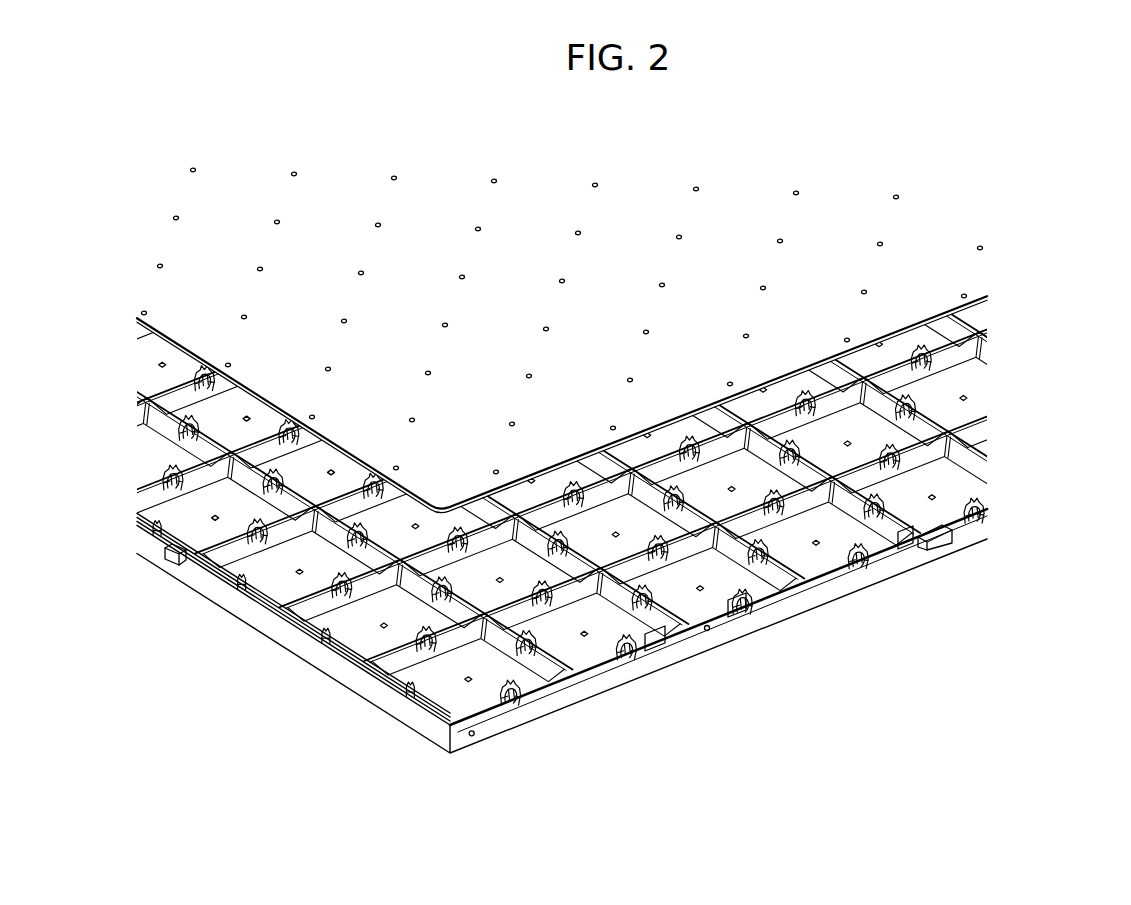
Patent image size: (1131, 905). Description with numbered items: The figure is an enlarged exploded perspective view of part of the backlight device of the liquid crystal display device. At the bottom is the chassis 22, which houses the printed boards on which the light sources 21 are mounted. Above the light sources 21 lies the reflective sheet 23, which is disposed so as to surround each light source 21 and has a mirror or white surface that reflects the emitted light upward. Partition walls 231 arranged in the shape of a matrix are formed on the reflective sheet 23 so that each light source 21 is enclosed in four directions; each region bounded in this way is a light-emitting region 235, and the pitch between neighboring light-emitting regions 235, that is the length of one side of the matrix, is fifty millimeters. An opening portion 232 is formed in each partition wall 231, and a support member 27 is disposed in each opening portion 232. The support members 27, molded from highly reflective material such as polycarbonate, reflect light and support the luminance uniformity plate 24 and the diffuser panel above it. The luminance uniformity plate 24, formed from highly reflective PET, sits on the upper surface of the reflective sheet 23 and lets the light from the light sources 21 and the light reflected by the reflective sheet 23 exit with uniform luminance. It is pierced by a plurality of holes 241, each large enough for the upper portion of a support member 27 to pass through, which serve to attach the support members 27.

The light source 21 is at (943, 496).
The chassis 22 is at (905, 558).
The reflective sheet 23 is at (565, 543).
The partition wall 231 is at (518, 613).
The opening portion 232 is at (752, 567).
The light-emitting region 235 is at (442, 692).
The luminance uniformity plate 24 is at (947, 278).
The hole 241 is at (893, 195).
The support member 27 is at (875, 527).